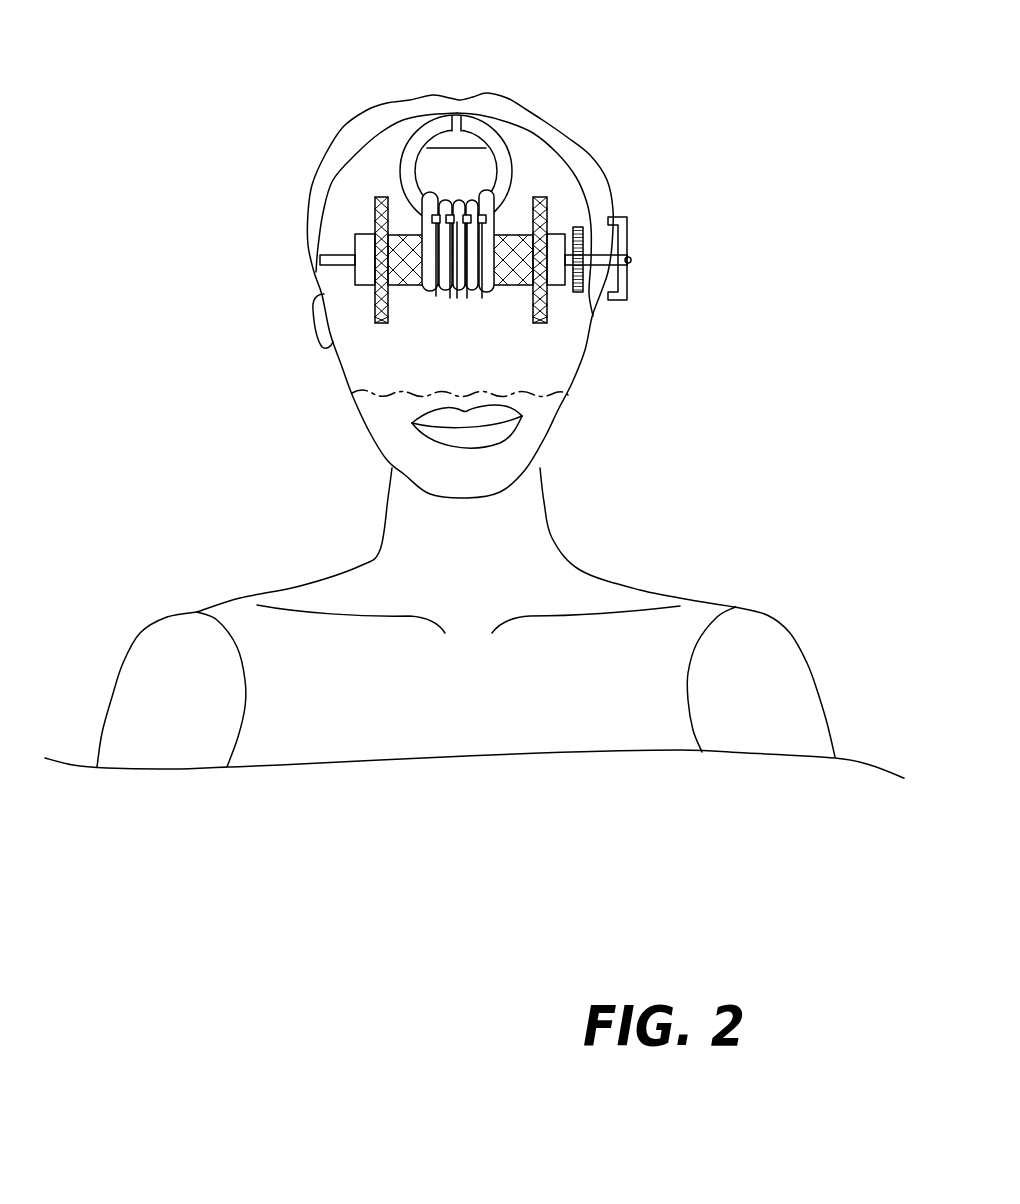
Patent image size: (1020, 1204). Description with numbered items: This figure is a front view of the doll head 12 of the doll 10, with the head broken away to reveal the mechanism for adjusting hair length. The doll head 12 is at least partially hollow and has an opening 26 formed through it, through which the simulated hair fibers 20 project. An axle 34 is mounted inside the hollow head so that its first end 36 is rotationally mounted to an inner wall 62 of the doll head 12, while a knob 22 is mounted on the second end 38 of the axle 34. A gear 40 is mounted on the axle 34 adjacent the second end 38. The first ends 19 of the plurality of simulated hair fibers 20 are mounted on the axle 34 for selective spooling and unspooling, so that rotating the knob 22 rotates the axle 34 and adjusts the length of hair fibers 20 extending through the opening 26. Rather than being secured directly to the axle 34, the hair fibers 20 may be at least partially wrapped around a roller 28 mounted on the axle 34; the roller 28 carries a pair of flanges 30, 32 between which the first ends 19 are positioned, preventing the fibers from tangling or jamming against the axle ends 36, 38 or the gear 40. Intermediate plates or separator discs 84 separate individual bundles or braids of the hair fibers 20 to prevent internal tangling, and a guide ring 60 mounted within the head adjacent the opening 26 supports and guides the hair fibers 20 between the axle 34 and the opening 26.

The head-worn device system 10 is at (191, 373).
The doll head 12 is at (583, 196).
The first ends of simulated hair fibers 19 is at (457, 302).
The simulated hair fibers 20 is at (512, 222).
The knob 22 is at (627, 240).
The opening 26 is at (503, 197).
The roller 28 is at (539, 325).
The flange 30 is at (373, 322).
The flange 32 is at (552, 286).
The axle 34 is at (342, 265).
The first end of axle 36 is at (320, 256).
The second end of axle 38 is at (608, 300).
The gear 40 is at (577, 292).
The guide ring 60 is at (424, 136).
The inner wall 62 is at (328, 226).
The separator discs 84 is at (434, 207).